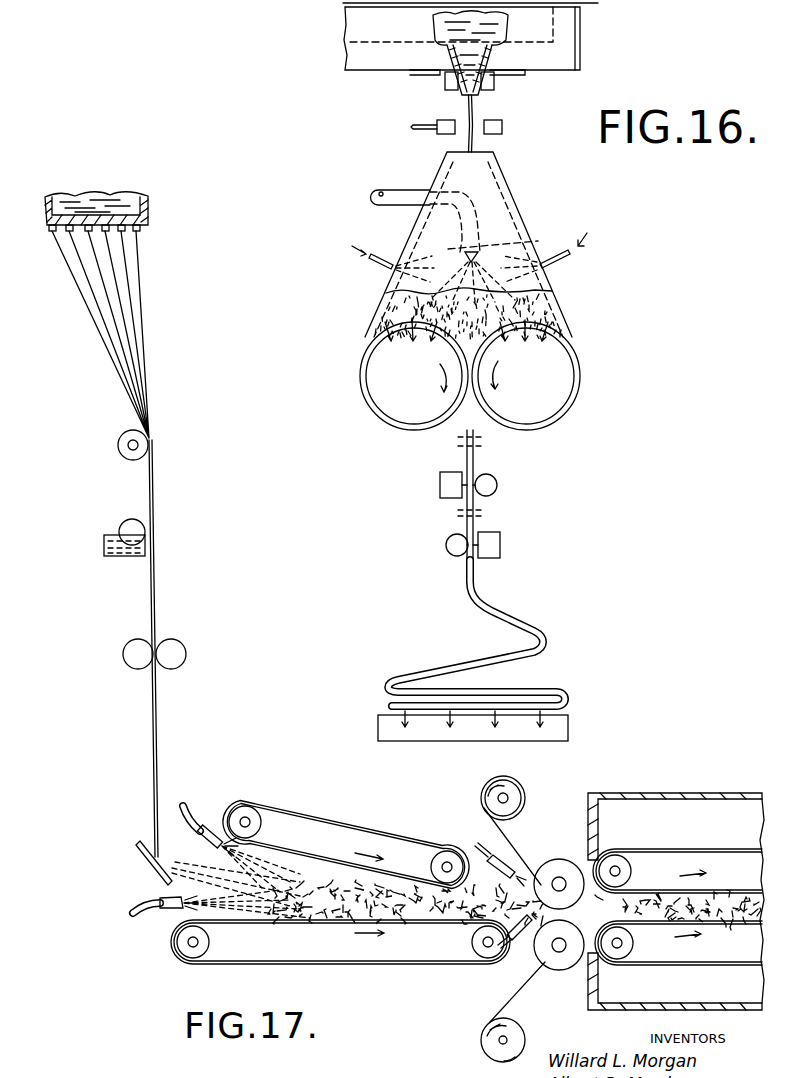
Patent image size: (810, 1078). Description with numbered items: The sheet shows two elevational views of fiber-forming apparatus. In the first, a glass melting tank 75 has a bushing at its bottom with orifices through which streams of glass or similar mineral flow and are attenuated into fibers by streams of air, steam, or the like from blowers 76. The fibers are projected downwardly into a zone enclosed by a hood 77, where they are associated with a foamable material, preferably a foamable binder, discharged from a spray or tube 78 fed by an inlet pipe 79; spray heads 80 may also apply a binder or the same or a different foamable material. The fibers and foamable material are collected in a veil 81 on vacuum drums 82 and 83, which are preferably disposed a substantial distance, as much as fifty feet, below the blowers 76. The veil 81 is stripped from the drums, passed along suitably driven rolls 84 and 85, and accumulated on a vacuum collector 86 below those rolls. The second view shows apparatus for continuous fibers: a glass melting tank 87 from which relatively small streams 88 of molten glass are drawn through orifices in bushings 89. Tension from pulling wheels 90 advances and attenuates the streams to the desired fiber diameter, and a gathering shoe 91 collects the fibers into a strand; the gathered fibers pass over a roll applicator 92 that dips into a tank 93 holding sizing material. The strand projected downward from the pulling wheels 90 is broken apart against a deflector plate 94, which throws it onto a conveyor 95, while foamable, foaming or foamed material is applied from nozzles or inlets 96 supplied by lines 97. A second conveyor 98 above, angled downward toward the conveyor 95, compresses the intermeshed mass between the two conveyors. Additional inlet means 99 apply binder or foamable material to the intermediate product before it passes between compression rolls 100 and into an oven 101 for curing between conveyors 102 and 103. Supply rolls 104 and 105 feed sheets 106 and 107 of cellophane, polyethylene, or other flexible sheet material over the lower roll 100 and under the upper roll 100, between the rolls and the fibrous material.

In FIG. 16, the glass melting tank 75 is at (584, 36).
In FIG. 16, the blowers 76 is at (437, 134).
In FIG. 16, the hood 77 is at (525, 217).
In FIG. 16, the spray or tube 78 is at (538, 241).
In FIG. 16, the inlet pipe 79 is at (402, 207).
In FIG. 16, the spray heads 80 is at (390, 268).
In FIG. 16, the veil 81 is at (476, 437).
In FIG. 16, the vacuum drum 82 is at (376, 418).
In FIG. 16, the vacuum drum 83 is at (578, 386).
In FIG. 16, the driven roll 84 is at (497, 485).
In FIG. 16, the driven roll 85 is at (449, 553).
In FIG. 16, the vacuum collector 86 is at (572, 722).
In FIG. 17, the glass melting tank 87 is at (158, 212).
In FIG. 17, the streams of molten glass 88 is at (126, 262).
In FIG. 17, the bushings 89 is at (138, 232).
In FIG. 17, the pulling wheels 90 is at (132, 667).
In FIG. 17, the gathering shoe 91 is at (124, 452).
In FIG. 17, the roll applicator 92 is at (123, 522).
In FIG. 17, the tank 93 is at (110, 559).
In FIG. 17, the deflector plate 94 is at (140, 860).
In FIG. 17, the conveyor 95 is at (306, 933).
In FIG. 17, the nozzles or inlets 96 is at (218, 828).
In FIG. 17, the lines 97 is at (196, 821).
In FIG. 17, the second conveyor 98 is at (305, 853).
In FIG. 17, the inlet means 99 is at (492, 845).
In FIG. 17, the compression rolls 100 is at (574, 859).
In FIG. 17, the oven 101 is at (670, 791).
In FIG. 17, the conveyor 102 is at (672, 855).
In FIG. 17, the conveyor 103 is at (668, 968).
In FIG. 17, the supply roll 104 is at (482, 1047).
In FIG. 17, the supply roll 105 is at (514, 783).
In FIG. 17, the sheet 106 is at (502, 1001).
In FIG. 17, the sheet 107 is at (509, 851).